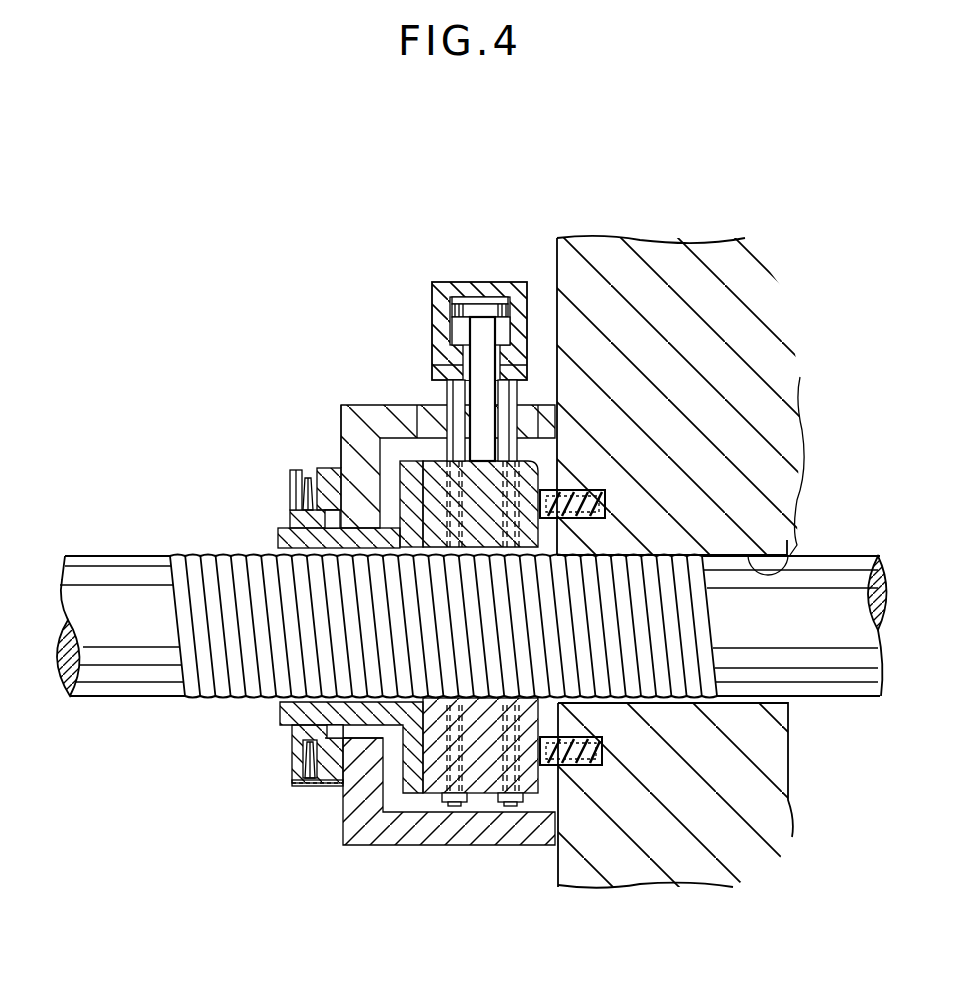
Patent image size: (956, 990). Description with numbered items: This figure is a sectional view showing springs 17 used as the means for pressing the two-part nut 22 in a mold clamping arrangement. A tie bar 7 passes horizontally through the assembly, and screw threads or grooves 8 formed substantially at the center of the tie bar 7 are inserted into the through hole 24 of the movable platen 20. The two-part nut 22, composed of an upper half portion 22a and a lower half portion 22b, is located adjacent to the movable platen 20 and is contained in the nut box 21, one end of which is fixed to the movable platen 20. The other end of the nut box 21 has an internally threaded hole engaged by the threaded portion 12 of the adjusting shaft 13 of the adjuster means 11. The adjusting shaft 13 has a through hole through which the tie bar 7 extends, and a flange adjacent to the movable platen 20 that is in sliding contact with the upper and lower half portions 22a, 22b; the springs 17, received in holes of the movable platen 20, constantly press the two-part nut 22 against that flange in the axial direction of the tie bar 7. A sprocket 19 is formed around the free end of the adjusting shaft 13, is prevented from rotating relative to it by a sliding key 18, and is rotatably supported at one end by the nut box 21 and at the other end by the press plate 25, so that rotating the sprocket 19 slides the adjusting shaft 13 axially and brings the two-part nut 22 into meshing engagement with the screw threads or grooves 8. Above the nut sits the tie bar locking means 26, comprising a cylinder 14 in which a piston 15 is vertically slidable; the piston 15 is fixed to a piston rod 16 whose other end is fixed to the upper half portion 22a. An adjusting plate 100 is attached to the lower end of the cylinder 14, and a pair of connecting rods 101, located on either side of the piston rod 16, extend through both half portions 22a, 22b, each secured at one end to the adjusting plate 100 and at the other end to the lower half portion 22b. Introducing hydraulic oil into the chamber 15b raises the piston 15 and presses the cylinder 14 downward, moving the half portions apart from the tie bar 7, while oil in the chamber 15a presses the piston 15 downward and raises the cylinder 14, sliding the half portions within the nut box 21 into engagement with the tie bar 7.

The tie bar 7 is at (866, 682).
The screw threads or grooves 8 is at (185, 553).
The adjuster means 11 is at (283, 422).
The threaded portion 12 is at (334, 468).
The adjusting shaft 13 is at (275, 545).
The cylinder 14 is at (465, 305).
The piston 15 is at (462, 282).
The chamber 15a is at (497, 300).
The chamber 15b is at (432, 365).
The piston rod 16 is at (457, 333).
The springs 17 is at (594, 486).
The sliding key 18 is at (280, 530).
The sprocket 19 is at (305, 482).
The movable platen 20 is at (629, 260).
The nut box 21 is at (352, 432).
The two-part nut 22 is at (472, 852).
The upper half portion 22a is at (428, 462).
The lower half portion 22b is at (487, 765).
The through hole 24 is at (788, 557).
The press plate 25 is at (288, 481).
The tie bar locking means 26 is at (474, 262).
The adjusting plate 100 is at (440, 392).
The connecting rod 101 is at (447, 403).